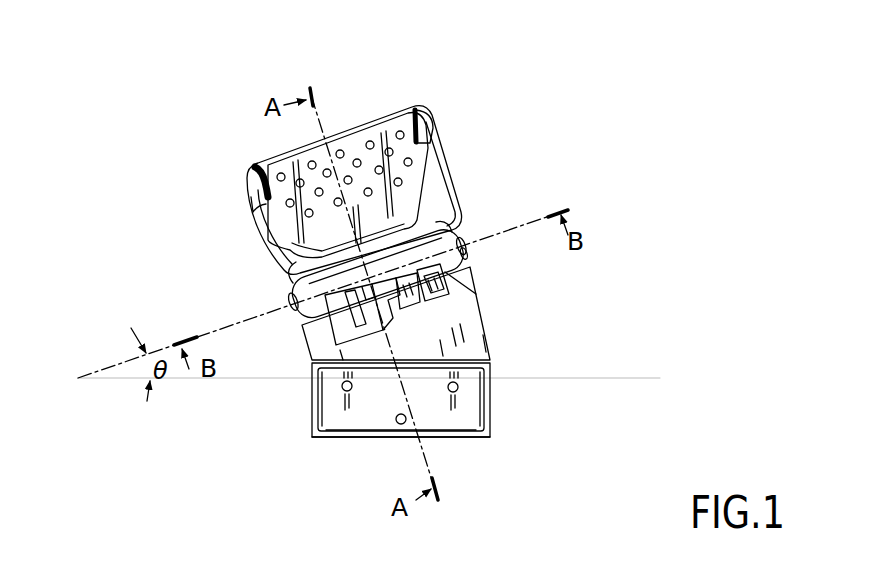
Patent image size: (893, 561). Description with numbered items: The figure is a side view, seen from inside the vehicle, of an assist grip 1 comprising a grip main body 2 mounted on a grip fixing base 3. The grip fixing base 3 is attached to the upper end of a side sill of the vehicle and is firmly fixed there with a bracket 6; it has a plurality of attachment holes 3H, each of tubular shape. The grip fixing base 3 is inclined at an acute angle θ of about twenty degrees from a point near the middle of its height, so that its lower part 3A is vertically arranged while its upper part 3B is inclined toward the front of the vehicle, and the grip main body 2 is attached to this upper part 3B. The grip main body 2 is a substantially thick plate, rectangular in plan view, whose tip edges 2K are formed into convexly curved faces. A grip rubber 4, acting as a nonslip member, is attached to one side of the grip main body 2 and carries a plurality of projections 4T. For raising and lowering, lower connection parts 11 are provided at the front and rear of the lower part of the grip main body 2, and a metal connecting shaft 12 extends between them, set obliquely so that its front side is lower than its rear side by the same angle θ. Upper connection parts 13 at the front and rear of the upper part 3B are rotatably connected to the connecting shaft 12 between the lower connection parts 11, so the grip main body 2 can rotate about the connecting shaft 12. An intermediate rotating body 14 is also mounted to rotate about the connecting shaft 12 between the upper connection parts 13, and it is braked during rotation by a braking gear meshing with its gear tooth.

The assist grip 1 is at (487, 221).
The grip main body 2 is at (447, 116).
The tip edges 2K is at (423, 108).
The grip rubber 4 is at (290, 196).
The projections 4T is at (279, 174).
The lower connection parts 11 is at (458, 236).
The metal connecting shaft 12 is at (467, 252).
The upper connection parts 13 is at (433, 287).
The bracket 6 is at (325, 320).
The intermediate rotating body 14 is at (385, 311).
The grip fixing base 3 is at (495, 405).
The lower part 3A is at (312, 438).
The upper part 3B is at (482, 299).
The attachment holes 3H is at (405, 422).